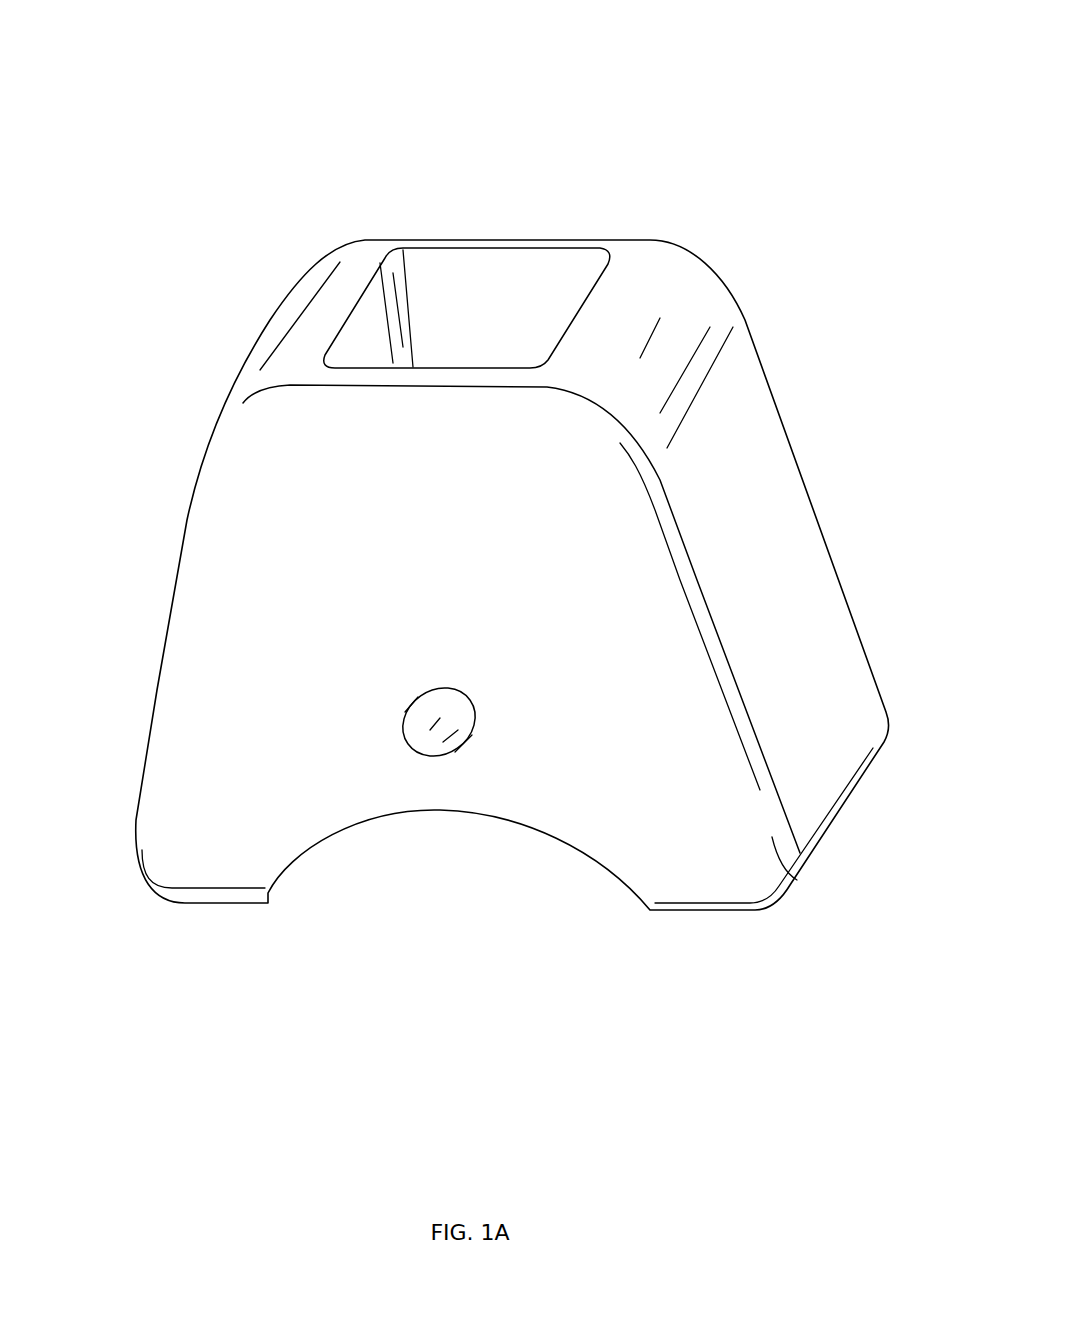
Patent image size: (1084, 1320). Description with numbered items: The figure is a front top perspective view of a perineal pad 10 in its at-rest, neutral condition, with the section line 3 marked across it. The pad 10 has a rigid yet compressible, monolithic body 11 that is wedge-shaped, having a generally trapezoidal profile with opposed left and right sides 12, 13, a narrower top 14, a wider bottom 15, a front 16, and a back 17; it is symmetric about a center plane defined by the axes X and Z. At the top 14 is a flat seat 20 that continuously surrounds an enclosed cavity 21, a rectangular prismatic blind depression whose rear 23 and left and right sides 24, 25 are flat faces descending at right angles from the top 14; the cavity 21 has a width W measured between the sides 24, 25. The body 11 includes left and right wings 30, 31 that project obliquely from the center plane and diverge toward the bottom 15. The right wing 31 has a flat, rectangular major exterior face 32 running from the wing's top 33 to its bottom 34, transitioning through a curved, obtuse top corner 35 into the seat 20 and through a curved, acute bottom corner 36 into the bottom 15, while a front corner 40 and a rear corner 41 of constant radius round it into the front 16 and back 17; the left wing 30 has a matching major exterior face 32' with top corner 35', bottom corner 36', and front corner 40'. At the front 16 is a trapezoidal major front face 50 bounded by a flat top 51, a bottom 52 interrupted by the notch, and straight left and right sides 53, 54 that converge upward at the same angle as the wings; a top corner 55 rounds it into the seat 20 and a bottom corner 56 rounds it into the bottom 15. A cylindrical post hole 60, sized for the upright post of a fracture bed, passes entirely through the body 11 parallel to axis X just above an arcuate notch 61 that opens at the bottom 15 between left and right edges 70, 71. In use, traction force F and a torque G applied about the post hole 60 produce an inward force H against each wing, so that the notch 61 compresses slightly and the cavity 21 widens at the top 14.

The perineal pad 10 is at (848, 243).
The body 11 is at (247, 393).
The left side 12 is at (172, 585).
The right side 13 is at (797, 553).
The top 14 is at (380, 238).
The bottom 15 is at (237, 903).
The front 16 is at (310, 620).
The back 17 is at (623, 236).
The seat 20 is at (662, 273).
The cavity 21 is at (507, 282).
The rear of cavity 23 is at (418, 290).
The left side of cavity 24 is at (372, 341).
The right side of cavity 25 is at (555, 346).
The left wing 30 is at (180, 905).
The right wing 31 is at (755, 917).
The major exterior face 32 is at (757, 616).
The major exterior face 32' is at (147, 548).
The top of right wing 33 is at (733, 357).
The bottom of right wing 34 is at (850, 770).
The top corner 35 is at (768, 298).
The top corner 35' is at (286, 316).
The bottom corner 36 is at (875, 830).
The bottom corner 36' is at (155, 872).
The front corner 40 is at (813, 867).
The front corner 40' is at (128, 688).
The rear corner 41 is at (877, 687).
The major front face 50 is at (342, 561).
The top of major front face 51 is at (310, 450).
The bottom of major front face 52 is at (187, 868).
The left side of major front face 53 is at (190, 757).
The right side of major front face 54 is at (655, 690).
The top corner 55 is at (268, 423).
The bottom corner 56 is at (697, 893).
The post hole 60 is at (437, 742).
The notch 61 is at (523, 873).
The left edge 70 is at (270, 903).
The right edge 71 is at (653, 913).
The width W is at (355, 5).
The inward force H is at (847, 700).
The traction force F is at (777, 730).
The torque G is at (480, 630).
The axis X is at (725, 128).
The axis Z is at (447, 100).
The section line 3- 3 is at (727, 118).